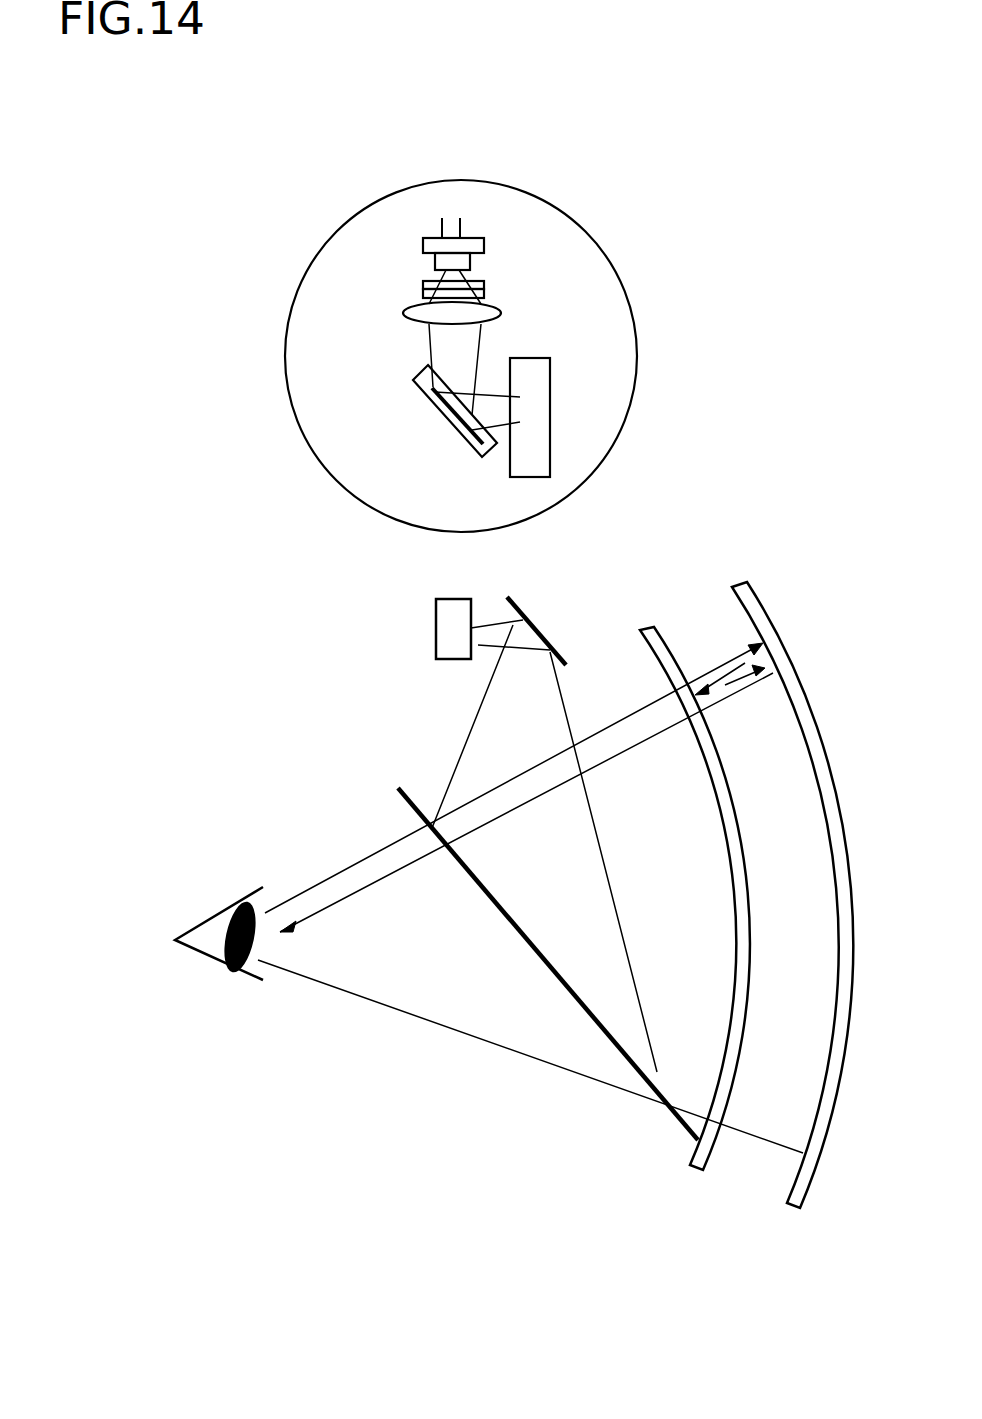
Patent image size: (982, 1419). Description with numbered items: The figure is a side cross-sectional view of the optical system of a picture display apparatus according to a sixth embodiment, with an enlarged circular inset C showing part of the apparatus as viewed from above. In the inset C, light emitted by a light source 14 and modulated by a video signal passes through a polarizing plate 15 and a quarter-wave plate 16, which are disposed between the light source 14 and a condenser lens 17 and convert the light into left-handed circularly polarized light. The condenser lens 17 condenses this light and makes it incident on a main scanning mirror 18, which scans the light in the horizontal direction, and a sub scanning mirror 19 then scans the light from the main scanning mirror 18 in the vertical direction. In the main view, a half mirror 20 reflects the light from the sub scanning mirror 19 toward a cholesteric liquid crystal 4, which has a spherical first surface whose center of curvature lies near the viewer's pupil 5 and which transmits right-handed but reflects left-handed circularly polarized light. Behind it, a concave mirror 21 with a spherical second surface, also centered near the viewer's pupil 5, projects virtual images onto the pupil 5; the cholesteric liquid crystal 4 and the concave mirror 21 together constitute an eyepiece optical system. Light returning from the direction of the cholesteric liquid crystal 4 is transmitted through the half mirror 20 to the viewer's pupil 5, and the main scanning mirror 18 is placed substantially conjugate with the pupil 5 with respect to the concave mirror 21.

The part of the picture display apparatus viewed from above C is at (280, 331).
The light source 14 is at (484, 248).
The polarizing plate 15 is at (484, 286).
The quarter-wave plate 16 is at (484, 294).
The condenser lens 17 is at (412, 310).
The main scanning mirror 18 is at (480, 447).
The sub scanning mirror 19 is at (550, 368).
The half mirror 20 is at (623, 1060).
The viewer's pupil 5 is at (210, 960).
The cholesteric liquid crystal 4 is at (695, 1168).
The concave mirror 21 is at (807, 1193).